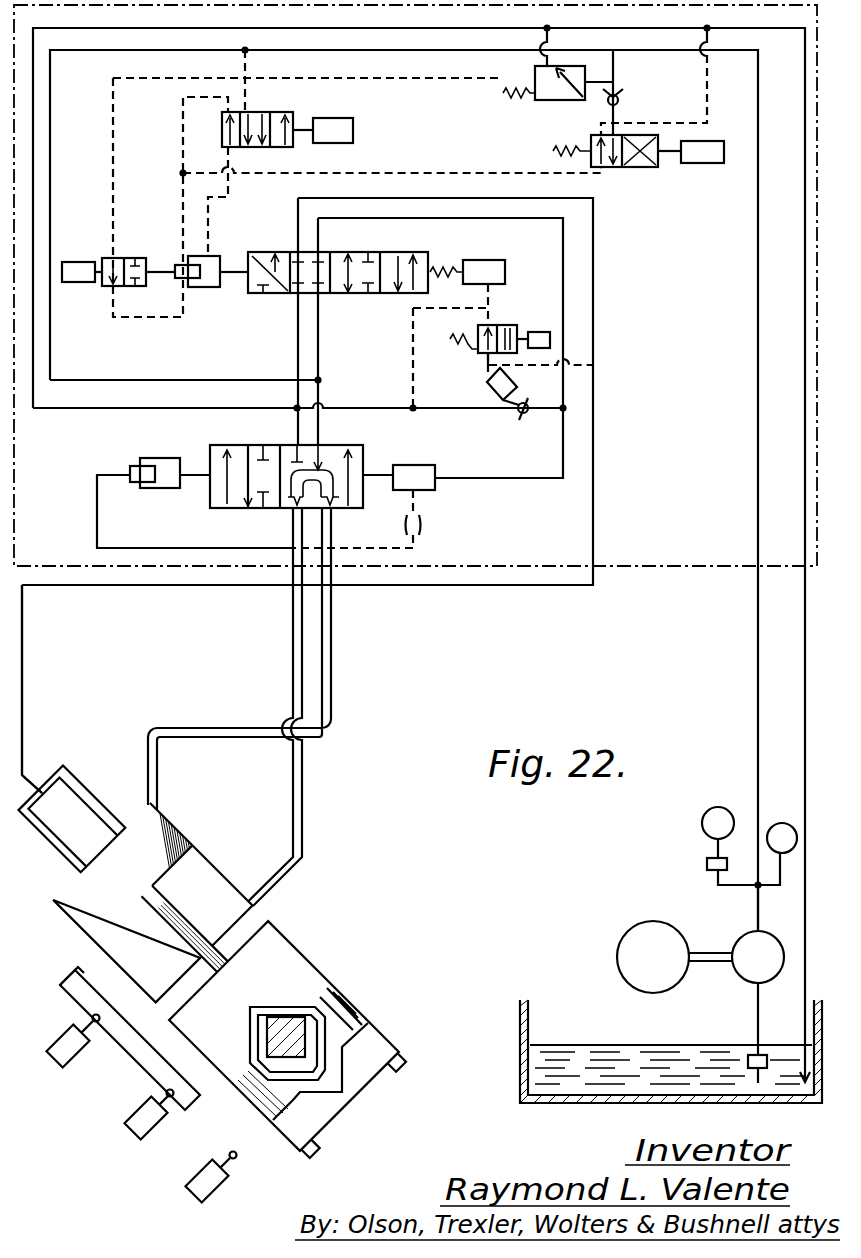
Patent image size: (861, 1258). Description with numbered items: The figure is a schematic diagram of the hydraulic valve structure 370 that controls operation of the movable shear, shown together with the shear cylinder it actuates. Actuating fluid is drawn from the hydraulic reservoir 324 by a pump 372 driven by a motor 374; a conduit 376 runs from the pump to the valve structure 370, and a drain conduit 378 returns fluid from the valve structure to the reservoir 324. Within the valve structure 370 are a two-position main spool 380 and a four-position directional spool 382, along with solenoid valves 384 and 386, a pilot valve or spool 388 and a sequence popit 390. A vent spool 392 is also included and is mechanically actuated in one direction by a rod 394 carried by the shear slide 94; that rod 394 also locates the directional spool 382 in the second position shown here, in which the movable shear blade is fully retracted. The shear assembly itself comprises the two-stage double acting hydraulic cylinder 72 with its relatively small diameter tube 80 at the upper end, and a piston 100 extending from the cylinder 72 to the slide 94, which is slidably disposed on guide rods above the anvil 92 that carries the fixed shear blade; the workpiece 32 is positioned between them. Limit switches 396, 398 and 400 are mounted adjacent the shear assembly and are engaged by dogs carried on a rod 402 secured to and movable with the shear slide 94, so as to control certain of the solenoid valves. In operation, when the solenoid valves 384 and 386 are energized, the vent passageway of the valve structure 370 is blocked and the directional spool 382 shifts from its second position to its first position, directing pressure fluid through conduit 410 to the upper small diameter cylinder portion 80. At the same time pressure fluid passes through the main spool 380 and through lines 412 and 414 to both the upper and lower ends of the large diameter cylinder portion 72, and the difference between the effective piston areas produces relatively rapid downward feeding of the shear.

The workpiece 32 is at (290, 1020).
The two-stage double acting hydraulic cylinder 72 is at (162, 810).
The relatively small diameter tube 80 is at (92, 793).
The anvil 92 is at (368, 1045).
The slide or shear blade holder 94 is at (273, 940).
The piston 100 is at (180, 900).
The reservoir 324 is at (518, 1074).
The valve structure 370 is at (677, 572).
The pump 372 is at (748, 940).
The motor 374 is at (618, 948).
The conduit 376 is at (757, 254).
The drain conduit 378 is at (805, 219).
The two-position main spool 380 is at (212, 510).
The four-position directional spool 382 is at (284, 252).
The solenoid valve 384 is at (347, 124).
The solenoid valve 386 is at (652, 168).
The pilot valve or spool 388 is at (535, 313).
The sequence popit 390 is at (532, 404).
The vent spool 392 is at (108, 286).
The rod 394 is at (80, 262).
The limit switch 396 is at (63, 1055).
The limit switch 398 is at (200, 1195).
The limit switch 400 is at (127, 1130).
The rod 402 is at (147, 1040).
The conduit 410 is at (25, 703).
The line 412 is at (329, 616).
The line 414 is at (296, 637).